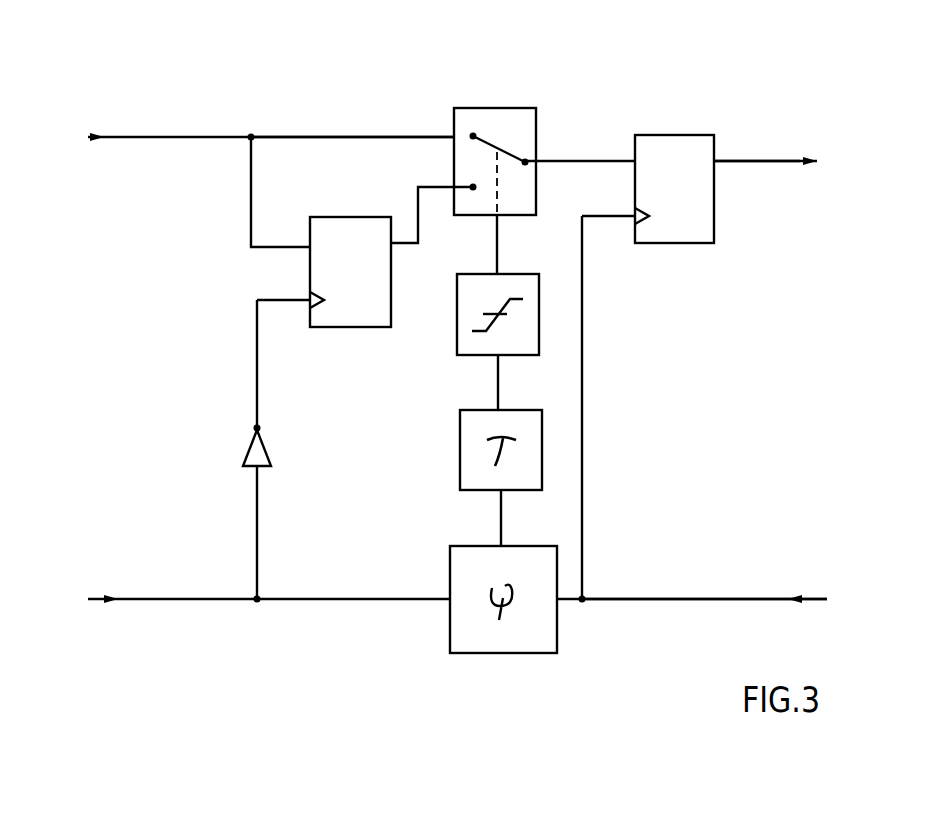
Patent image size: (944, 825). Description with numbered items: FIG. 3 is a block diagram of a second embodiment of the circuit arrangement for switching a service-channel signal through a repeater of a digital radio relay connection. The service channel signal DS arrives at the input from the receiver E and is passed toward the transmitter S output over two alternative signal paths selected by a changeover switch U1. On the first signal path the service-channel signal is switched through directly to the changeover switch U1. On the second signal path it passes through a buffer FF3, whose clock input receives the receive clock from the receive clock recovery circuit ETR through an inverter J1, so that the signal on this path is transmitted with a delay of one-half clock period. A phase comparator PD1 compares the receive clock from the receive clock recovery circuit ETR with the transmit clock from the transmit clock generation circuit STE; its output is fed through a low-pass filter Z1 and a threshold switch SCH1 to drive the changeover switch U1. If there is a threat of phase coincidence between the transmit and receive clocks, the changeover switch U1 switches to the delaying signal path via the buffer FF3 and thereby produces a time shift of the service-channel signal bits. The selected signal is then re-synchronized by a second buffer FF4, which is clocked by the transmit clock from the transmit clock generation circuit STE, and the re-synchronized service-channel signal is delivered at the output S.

The receiver E is at (256, 138).
The service channel signal DS is at (352, 118).
The changeover switch U1 is at (479, 107).
The buffer FF3 is at (268, 268).
The second buffer FF4 is at (668, 134).
The transmitter S is at (777, 158).
The threshold switch SCH1 is at (457, 336).
The low-pass filter Z1 is at (460, 443).
The phase comparator PD1 is at (548, 633).
The inverter J1 is at (271, 451).
The receive clock recovery circuit ETR is at (243, 603).
The transmit clock generation circuit STE is at (726, 600).